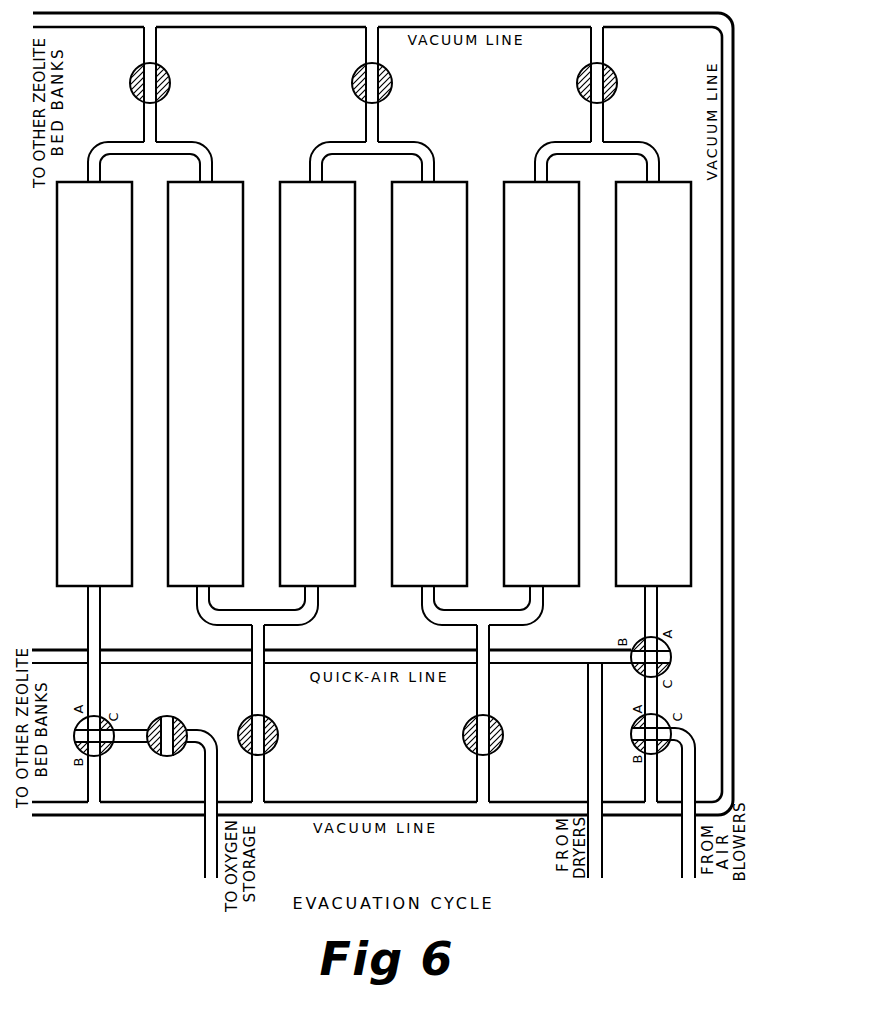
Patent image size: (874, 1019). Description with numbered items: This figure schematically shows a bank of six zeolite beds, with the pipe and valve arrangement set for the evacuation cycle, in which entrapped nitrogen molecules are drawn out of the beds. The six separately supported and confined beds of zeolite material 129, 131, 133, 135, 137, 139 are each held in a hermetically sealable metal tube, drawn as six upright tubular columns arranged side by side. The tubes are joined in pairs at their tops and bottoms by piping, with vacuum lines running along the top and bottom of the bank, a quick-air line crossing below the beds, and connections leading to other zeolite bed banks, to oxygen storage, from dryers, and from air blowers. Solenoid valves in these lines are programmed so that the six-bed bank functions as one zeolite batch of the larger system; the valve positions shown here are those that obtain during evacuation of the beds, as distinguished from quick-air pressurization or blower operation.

The zeolite bed 129 is at (101, 398).
The zeolite bed 131 is at (212, 398).
The zeolite bed 133 is at (324, 398).
The zeolite bed 135 is at (436, 398).
The zeolite bed 137 is at (548, 398).
The zeolite bed 139 is at (660, 398).